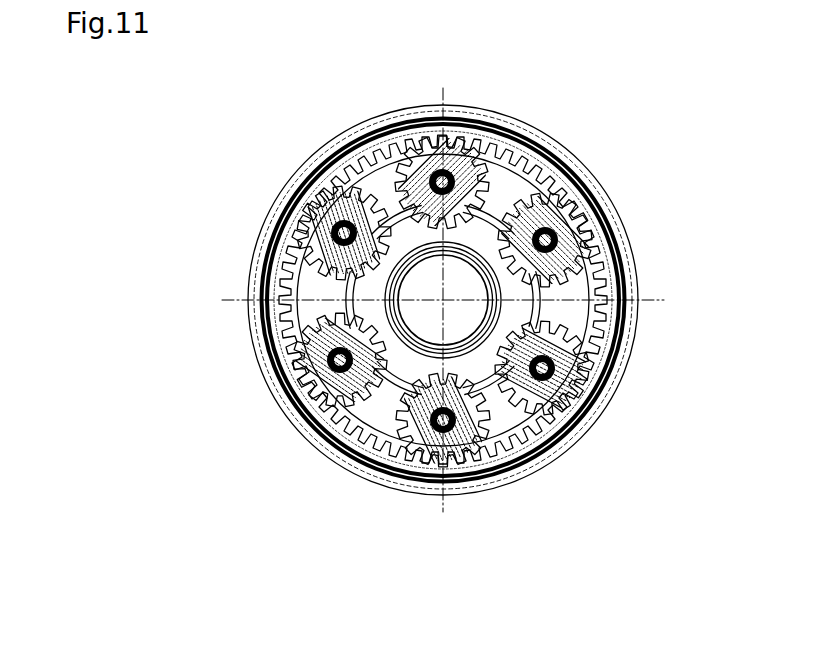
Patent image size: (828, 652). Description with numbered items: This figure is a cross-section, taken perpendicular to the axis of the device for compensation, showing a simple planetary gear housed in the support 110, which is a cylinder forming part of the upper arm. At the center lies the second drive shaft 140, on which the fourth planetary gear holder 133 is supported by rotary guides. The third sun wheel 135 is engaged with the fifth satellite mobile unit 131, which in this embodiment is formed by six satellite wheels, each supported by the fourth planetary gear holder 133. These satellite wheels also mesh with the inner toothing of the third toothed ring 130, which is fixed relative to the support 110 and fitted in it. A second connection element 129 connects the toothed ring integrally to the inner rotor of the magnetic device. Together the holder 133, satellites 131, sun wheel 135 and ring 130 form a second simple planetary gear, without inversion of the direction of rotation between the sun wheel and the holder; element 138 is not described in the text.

The support 110 is at (385, 122).
The second connection element 129 is at (535, 136).
The third toothed ring 130 is at (574, 196).
The fifth satellite mobile unit 131 is at (297, 240).
The fourth planetary gear holder 133 is at (327, 293).
The third sun wheel 135 is at (483, 380).
The planet gear pin 138 is at (426, 364).
The second drive shaft 140 is at (503, 315).